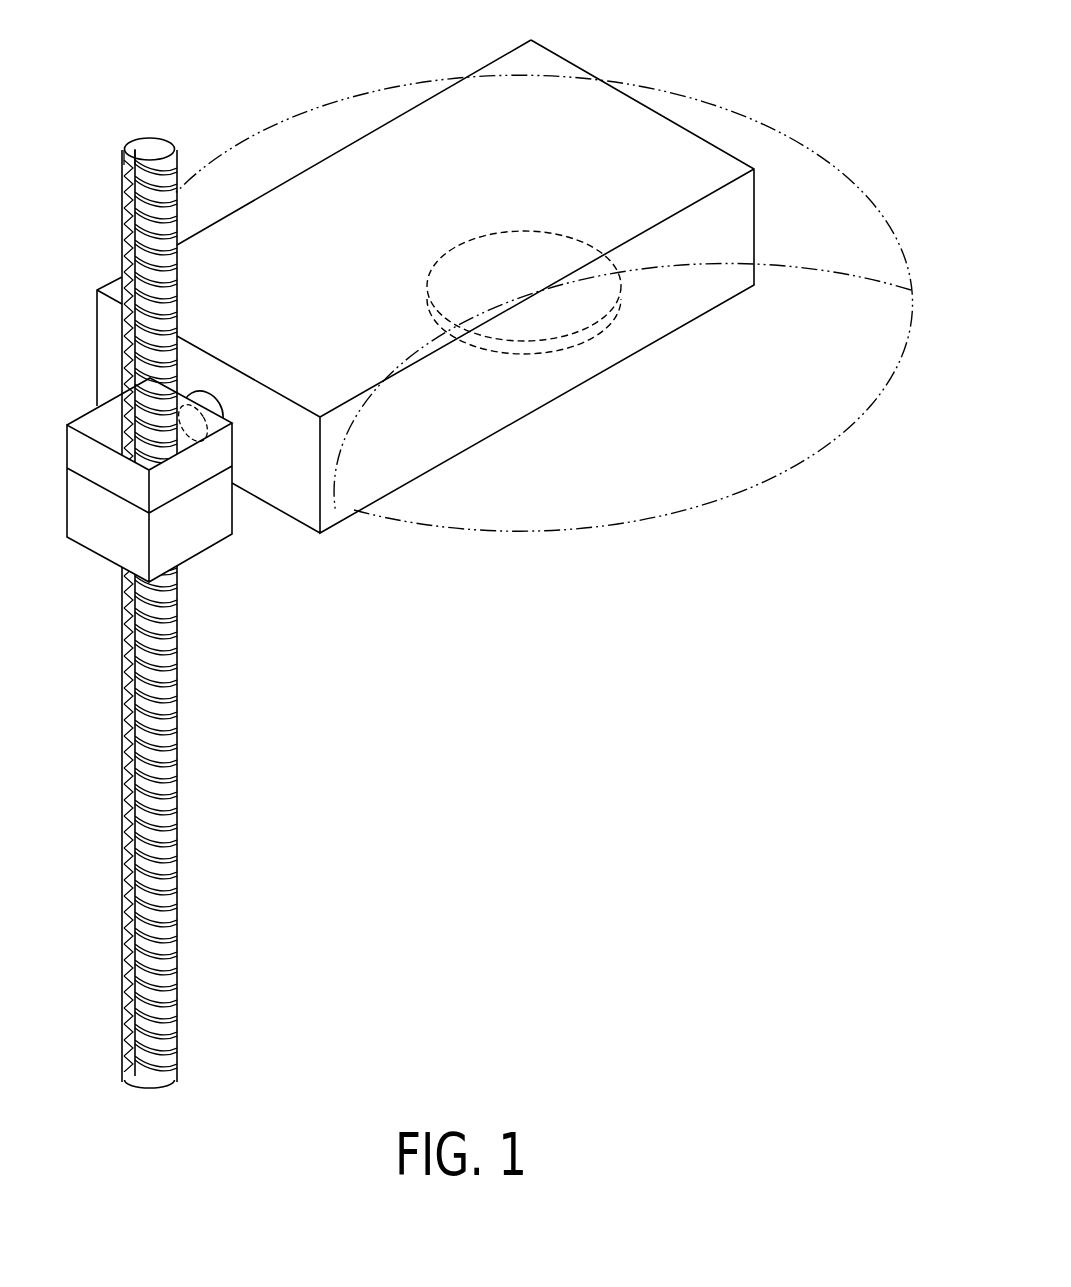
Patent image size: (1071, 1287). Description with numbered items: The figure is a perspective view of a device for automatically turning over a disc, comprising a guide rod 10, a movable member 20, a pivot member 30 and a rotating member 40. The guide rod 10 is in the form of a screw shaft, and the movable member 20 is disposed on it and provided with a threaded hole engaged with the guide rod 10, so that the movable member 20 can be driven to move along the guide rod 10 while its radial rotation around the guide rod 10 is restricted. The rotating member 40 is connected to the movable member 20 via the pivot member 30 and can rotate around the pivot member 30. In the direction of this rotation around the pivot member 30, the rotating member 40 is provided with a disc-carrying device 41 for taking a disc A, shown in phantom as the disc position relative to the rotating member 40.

The guide rod 10 is at (182, 875).
The movable member 20 is at (228, 543).
The pivot member 30 is at (210, 398).
The rotating member 40 is at (660, 344).
The disc-carrying device 41 is at (558, 328).
The disc A is at (766, 117).